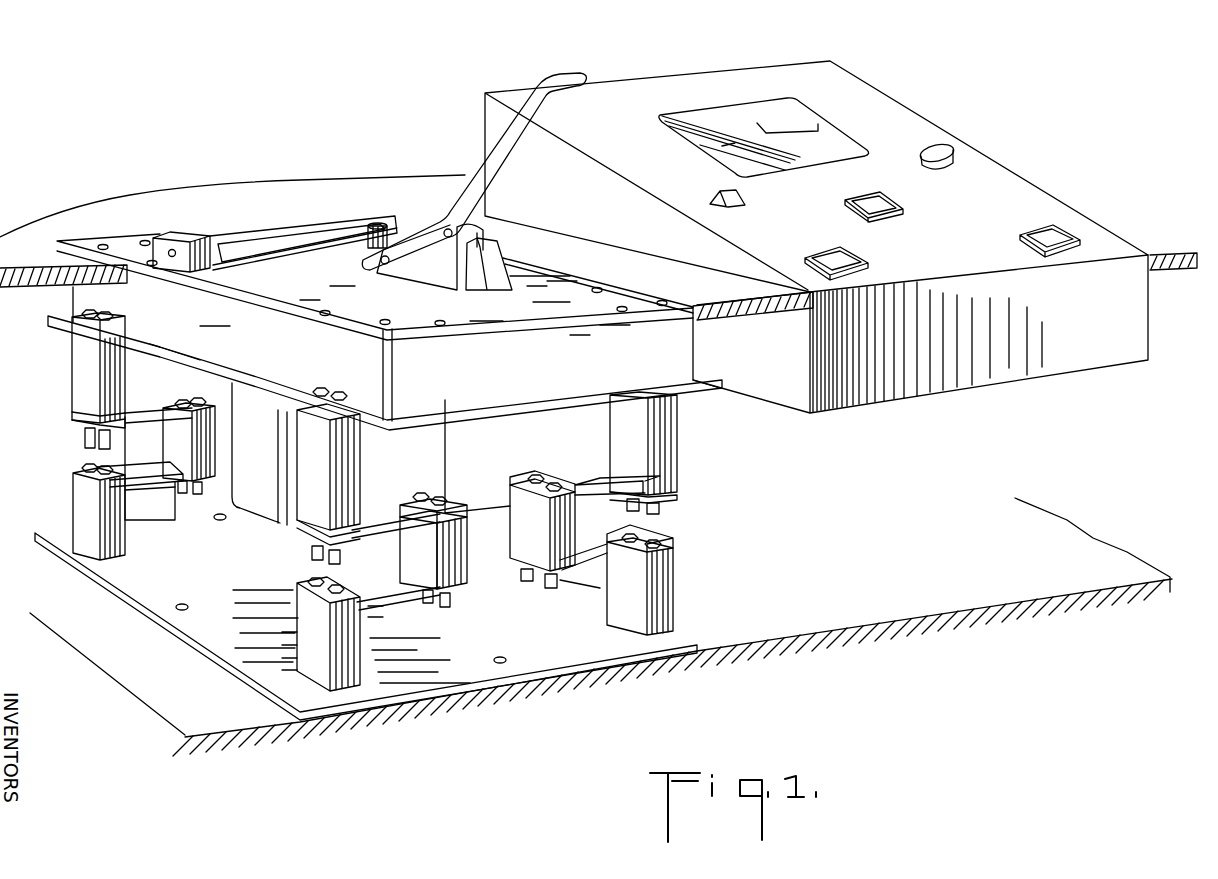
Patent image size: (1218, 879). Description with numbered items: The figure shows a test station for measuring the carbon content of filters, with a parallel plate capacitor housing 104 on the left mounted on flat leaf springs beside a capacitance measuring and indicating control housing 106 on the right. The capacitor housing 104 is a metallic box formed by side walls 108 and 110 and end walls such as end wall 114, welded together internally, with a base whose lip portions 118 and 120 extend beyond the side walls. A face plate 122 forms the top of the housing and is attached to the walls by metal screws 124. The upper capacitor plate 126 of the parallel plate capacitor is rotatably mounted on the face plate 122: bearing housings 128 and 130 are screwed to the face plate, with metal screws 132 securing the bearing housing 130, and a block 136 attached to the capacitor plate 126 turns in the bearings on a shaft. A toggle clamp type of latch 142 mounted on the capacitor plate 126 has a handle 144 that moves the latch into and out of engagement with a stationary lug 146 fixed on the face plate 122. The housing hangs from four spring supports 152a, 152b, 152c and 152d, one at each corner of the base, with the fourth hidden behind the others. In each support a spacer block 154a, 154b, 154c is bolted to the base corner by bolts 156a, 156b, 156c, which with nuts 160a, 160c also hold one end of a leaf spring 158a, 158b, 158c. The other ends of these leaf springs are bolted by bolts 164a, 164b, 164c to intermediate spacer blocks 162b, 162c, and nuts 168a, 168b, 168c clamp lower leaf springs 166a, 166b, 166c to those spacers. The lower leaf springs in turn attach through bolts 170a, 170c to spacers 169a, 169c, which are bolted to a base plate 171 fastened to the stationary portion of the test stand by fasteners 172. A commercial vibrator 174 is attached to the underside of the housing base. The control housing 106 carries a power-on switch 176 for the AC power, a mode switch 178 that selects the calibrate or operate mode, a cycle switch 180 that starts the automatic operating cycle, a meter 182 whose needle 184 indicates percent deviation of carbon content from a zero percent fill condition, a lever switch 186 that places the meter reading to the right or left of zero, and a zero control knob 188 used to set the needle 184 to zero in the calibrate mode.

The parallel plate capacitor housing 104 is at (257, 218).
The capacitance measuring and indicating control housing 106 is at (935, 121).
The side wall 108 is at (78, 307).
The side wall 110 is at (693, 343).
The end wall 114 is at (90, 294).
The lip portion 118 is at (168, 353).
The lip portion 120 is at (705, 383).
The face plate 122 is at (132, 243).
The metal screws 124 is at (103, 243).
The upper capacitor plate 126 is at (317, 262).
The bearing housing 128 is at (232, 354).
The bearing housing 130 is at (358, 222).
The metal screws 132 is at (197, 247).
The block 136 is at (288, 235).
The toggle clamp type of latch 142 is at (408, 243).
The handle 144 is at (487, 150).
The stationary lug 146 is at (496, 262).
The spring support 152a is at (110, 435).
The spring support 152b is at (366, 519).
The spring support 152c is at (620, 515).
The spring support 152d is at (460, 460).
The spacer block 154a is at (72, 375).
The spacer block 154b is at (307, 507).
The spacer block 154c is at (672, 437).
The bolts 156a is at (82, 319).
The bolts 156b is at (320, 389).
The bolts 156c is at (660, 508).
The leaf spring 158a is at (138, 414).
The leaf spring 158b is at (392, 530).
The leaf spring 158c is at (587, 485).
The nuts 160a is at (84, 436).
The nuts 160c is at (650, 500).
The spacer block 162b is at (410, 560).
The spacer block 162c is at (574, 518).
The bolts 164a is at (218, 393).
The bolts 164b is at (430, 495).
The bolts 164c is at (536, 478).
The leaf spring 166a is at (153, 483).
The leaf spring 166b is at (380, 603).
The leaf spring 166c is at (592, 572).
The nuts 168a is at (200, 494).
The nuts 168b is at (443, 603).
The nuts 168c is at (547, 583).
The spacer 169a is at (80, 456).
The spacer 169c is at (662, 590).
The bolts 170a is at (106, 468).
The bolts 170c is at (662, 544).
The base plate 171 is at (213, 645).
The fasteners 172 is at (182, 604).
The vibrator 174 is at (420, 454).
The power-on switch 176 is at (1050, 237).
The mode switch 178 is at (893, 202).
The cycle switch 180 is at (860, 258).
The meter 182 is at (803, 120).
The needle 184 is at (726, 142).
The lever switch 186 is at (745, 200).
The zero control knob 188 is at (946, 154).